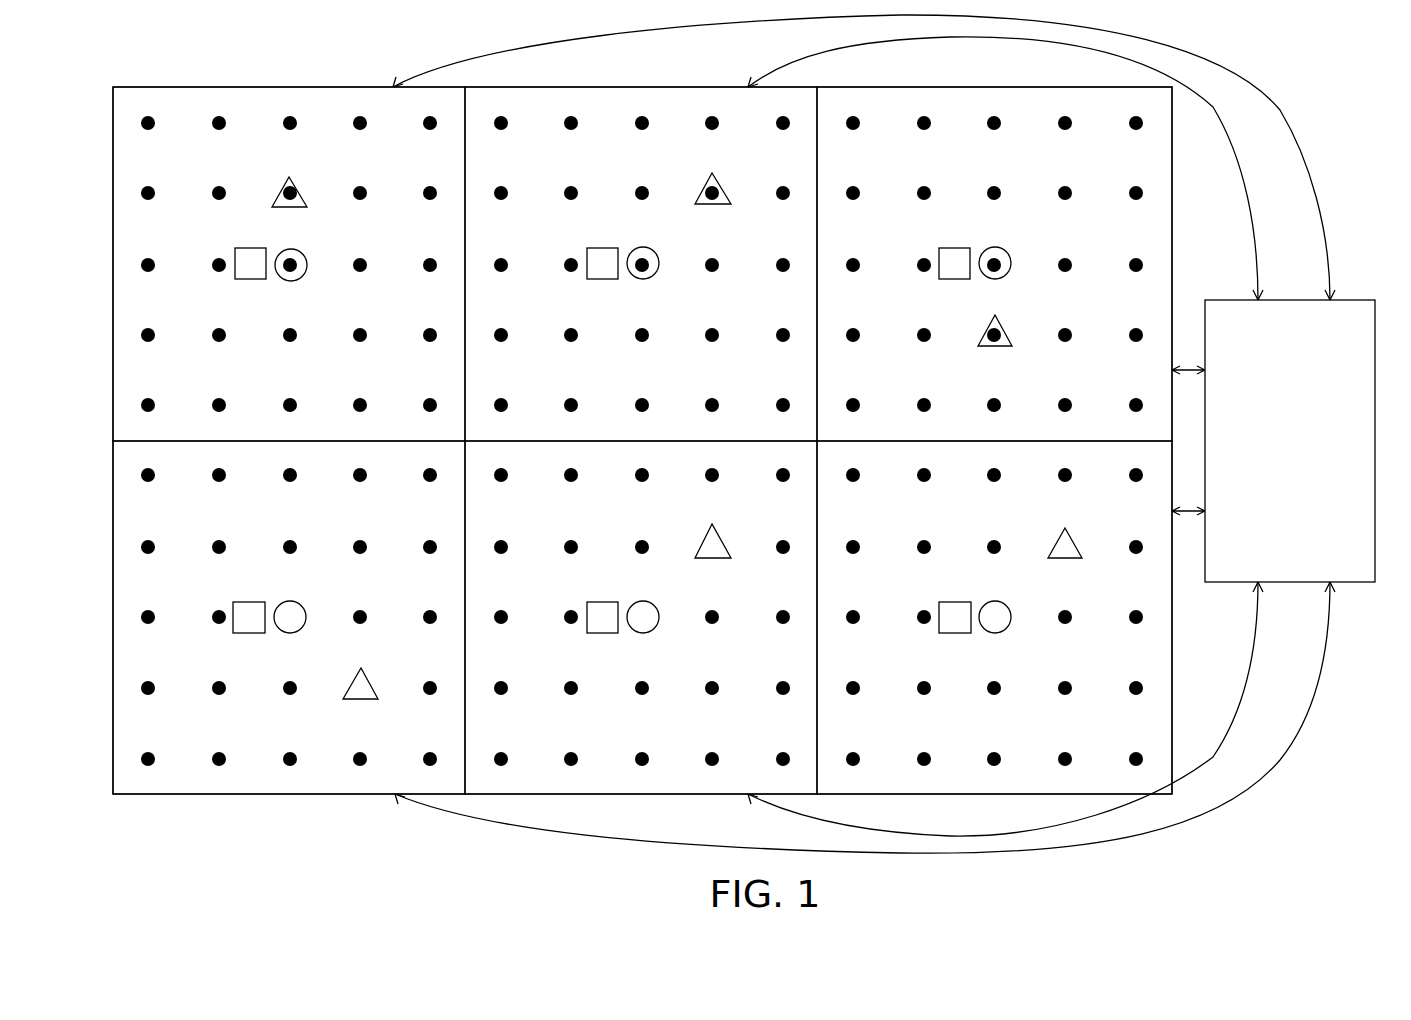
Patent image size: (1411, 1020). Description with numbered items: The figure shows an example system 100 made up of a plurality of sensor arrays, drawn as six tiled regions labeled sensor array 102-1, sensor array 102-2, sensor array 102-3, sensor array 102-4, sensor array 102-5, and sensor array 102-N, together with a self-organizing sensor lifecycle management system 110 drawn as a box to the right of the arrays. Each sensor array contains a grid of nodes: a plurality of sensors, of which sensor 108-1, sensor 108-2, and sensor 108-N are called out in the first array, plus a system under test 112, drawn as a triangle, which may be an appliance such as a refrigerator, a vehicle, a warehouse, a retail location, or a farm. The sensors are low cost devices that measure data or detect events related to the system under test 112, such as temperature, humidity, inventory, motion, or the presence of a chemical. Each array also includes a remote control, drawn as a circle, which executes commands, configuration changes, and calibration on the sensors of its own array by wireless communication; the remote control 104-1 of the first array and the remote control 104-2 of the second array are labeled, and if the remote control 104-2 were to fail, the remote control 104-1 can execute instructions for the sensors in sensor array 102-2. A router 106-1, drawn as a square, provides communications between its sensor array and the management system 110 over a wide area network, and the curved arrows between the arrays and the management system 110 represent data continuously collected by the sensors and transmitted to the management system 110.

The system 100 is at (145, 44).
The sensor array 102-1 is at (290, 87).
The sensor array 102-2 is at (642, 87).
The sensor array 102-3 is at (993, 87).
The sensor array 102-4 is at (290, 794).
The sensor array 102-5 is at (642, 794).
The sensor array 102-N is at (995, 794).
The remote control 104-1 is at (298, 253).
The remote control 104-2 is at (650, 253).
The router 106-1 is at (236, 279).
The sensor 108-1 is at (148, 115).
The sensor 108-2 is at (219, 115).
The sensor 108-N is at (425, 400).
The self-organizing sensor lifecycle management system 110 is at (1273, 534).
The system under test 112 is at (292, 178).